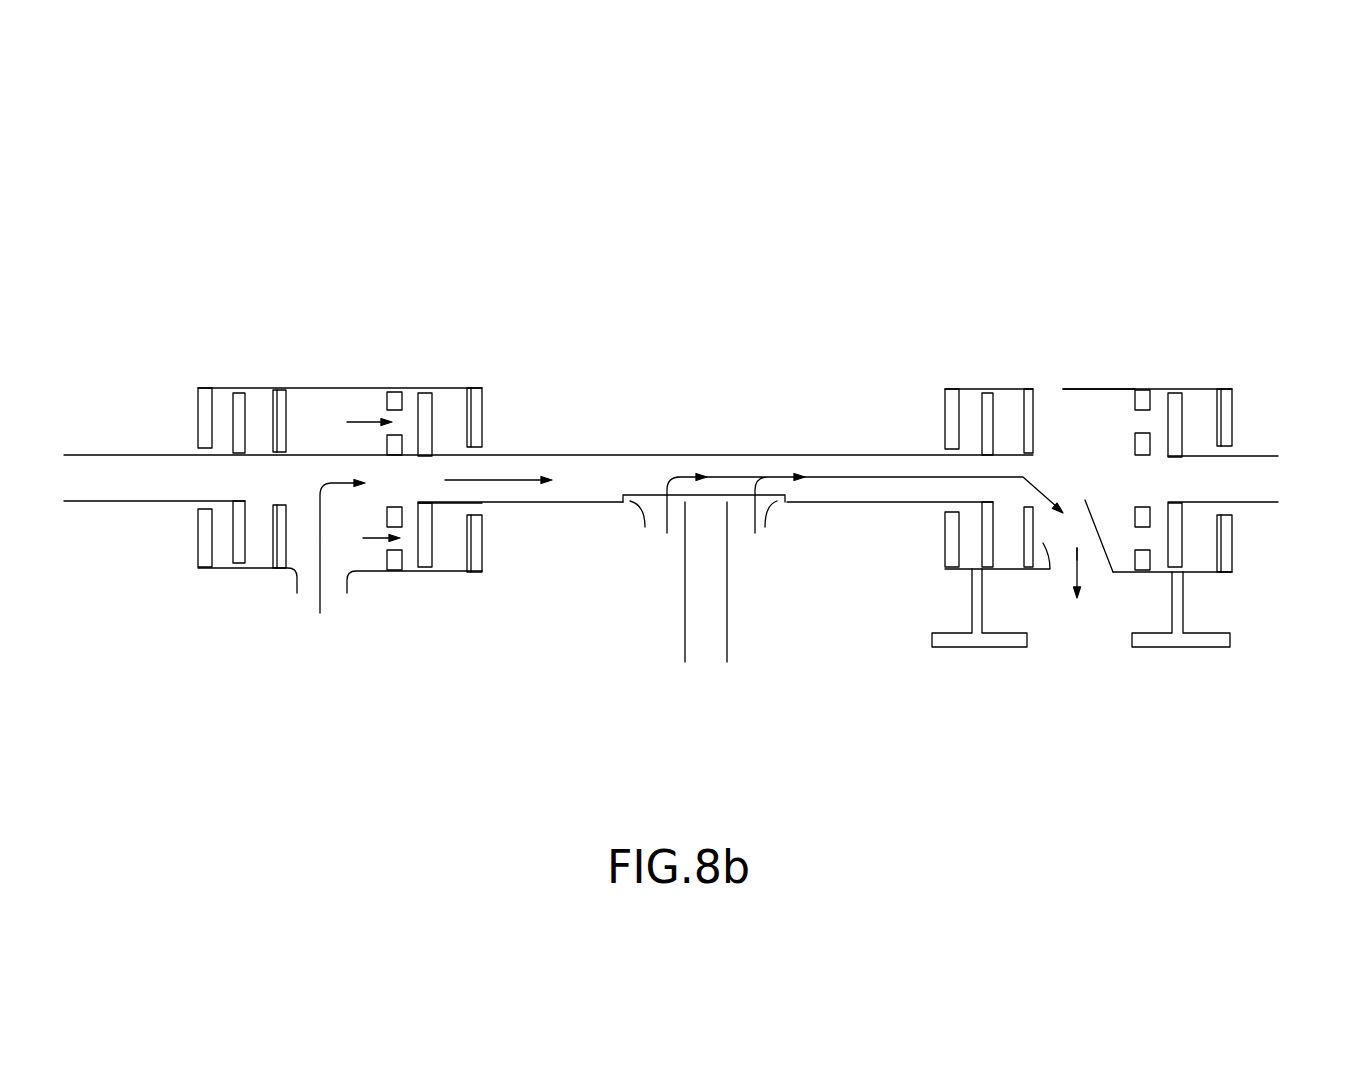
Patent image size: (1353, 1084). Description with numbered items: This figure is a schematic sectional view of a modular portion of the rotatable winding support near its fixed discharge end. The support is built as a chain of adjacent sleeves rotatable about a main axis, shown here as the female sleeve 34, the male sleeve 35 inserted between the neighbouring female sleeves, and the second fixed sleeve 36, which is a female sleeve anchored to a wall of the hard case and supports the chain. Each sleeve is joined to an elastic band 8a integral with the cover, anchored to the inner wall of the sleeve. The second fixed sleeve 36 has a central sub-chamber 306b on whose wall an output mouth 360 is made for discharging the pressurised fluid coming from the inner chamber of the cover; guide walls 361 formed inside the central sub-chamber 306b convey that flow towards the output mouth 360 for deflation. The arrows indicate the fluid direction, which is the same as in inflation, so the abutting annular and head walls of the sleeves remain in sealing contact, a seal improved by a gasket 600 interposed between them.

The female sleeve 34 is at (312, 378).
The male sleeve 35 is at (673, 442).
The second fixed sleeve 36 is at (1117, 378).
The central sub-chamber 306b is at (1078, 417).
The guide walls 361 is at (1095, 515).
The output mouth 360 is at (1089, 570).
The gasket 600 is at (270, 538).
The elastic band 8a is at (703, 563).